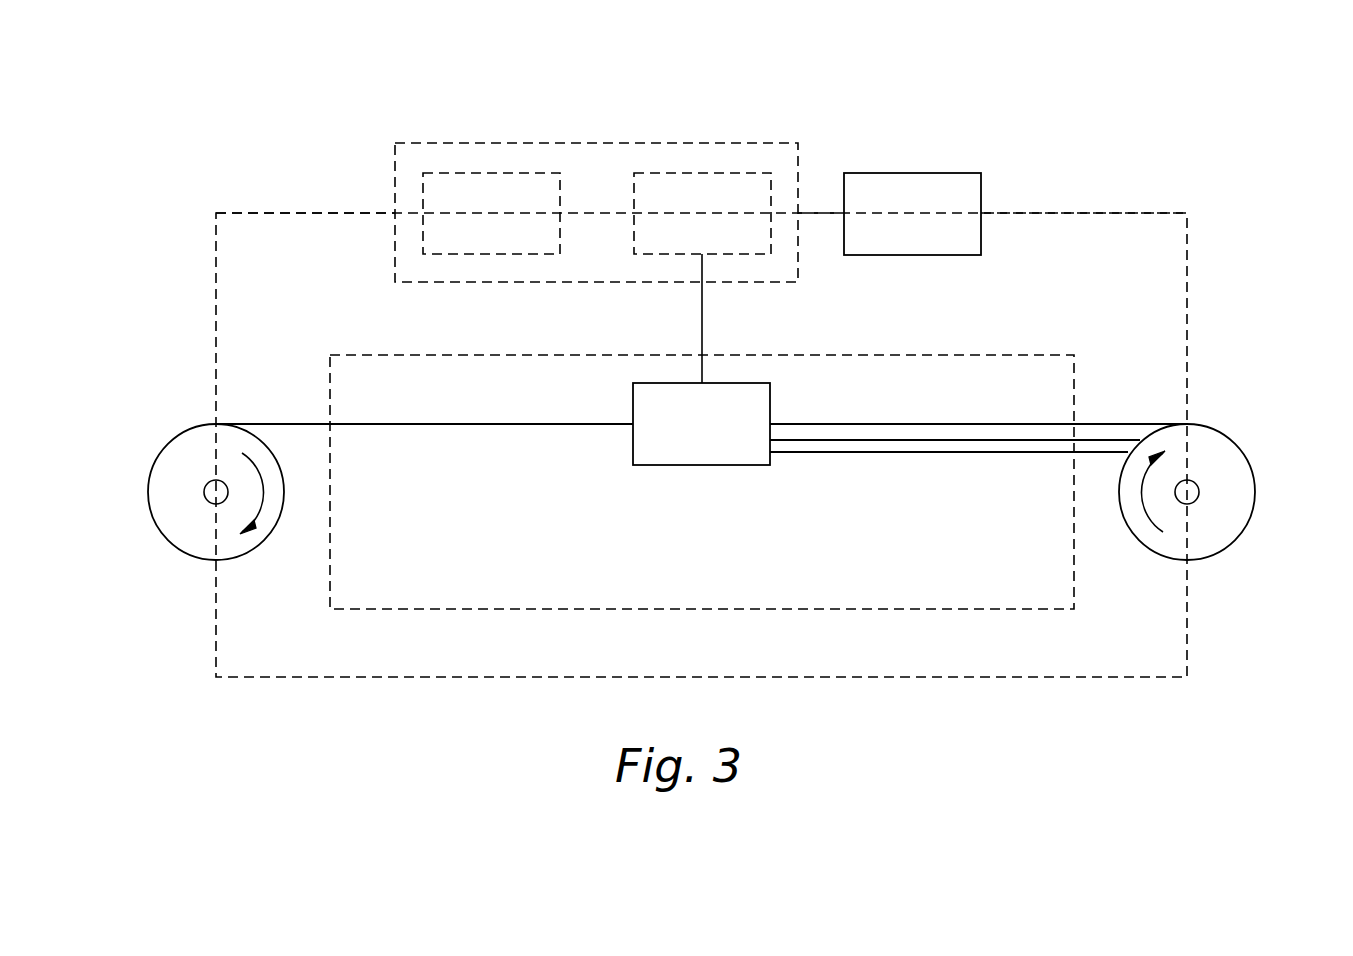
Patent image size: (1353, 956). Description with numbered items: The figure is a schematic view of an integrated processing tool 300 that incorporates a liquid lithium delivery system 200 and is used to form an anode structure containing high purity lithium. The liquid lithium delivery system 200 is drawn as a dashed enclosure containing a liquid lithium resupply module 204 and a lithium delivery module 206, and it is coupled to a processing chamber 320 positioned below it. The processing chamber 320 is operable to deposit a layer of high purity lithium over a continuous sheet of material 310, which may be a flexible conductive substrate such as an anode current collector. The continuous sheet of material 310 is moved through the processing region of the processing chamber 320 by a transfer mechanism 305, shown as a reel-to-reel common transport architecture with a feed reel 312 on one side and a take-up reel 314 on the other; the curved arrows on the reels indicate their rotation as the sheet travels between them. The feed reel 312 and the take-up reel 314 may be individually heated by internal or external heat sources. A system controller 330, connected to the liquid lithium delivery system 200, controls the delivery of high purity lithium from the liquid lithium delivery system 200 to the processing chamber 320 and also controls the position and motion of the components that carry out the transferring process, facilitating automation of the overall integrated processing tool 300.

The integrated processing tool 300 is at (180, 100).
The liquid lithium delivery system 200 is at (591, 143).
The liquid lithium resupply module 204 is at (512, 226).
The lithium delivery module 206 is at (724, 226).
The system controller 330 is at (934, 227).
The processing chamber 320 is at (725, 437).
The continuous sheet of material 310 is at (481, 425).
The transfer mechanism 305 is at (180, 404).
The feed reel 312 is at (172, 545).
The take-up reel 314 is at (1235, 545).